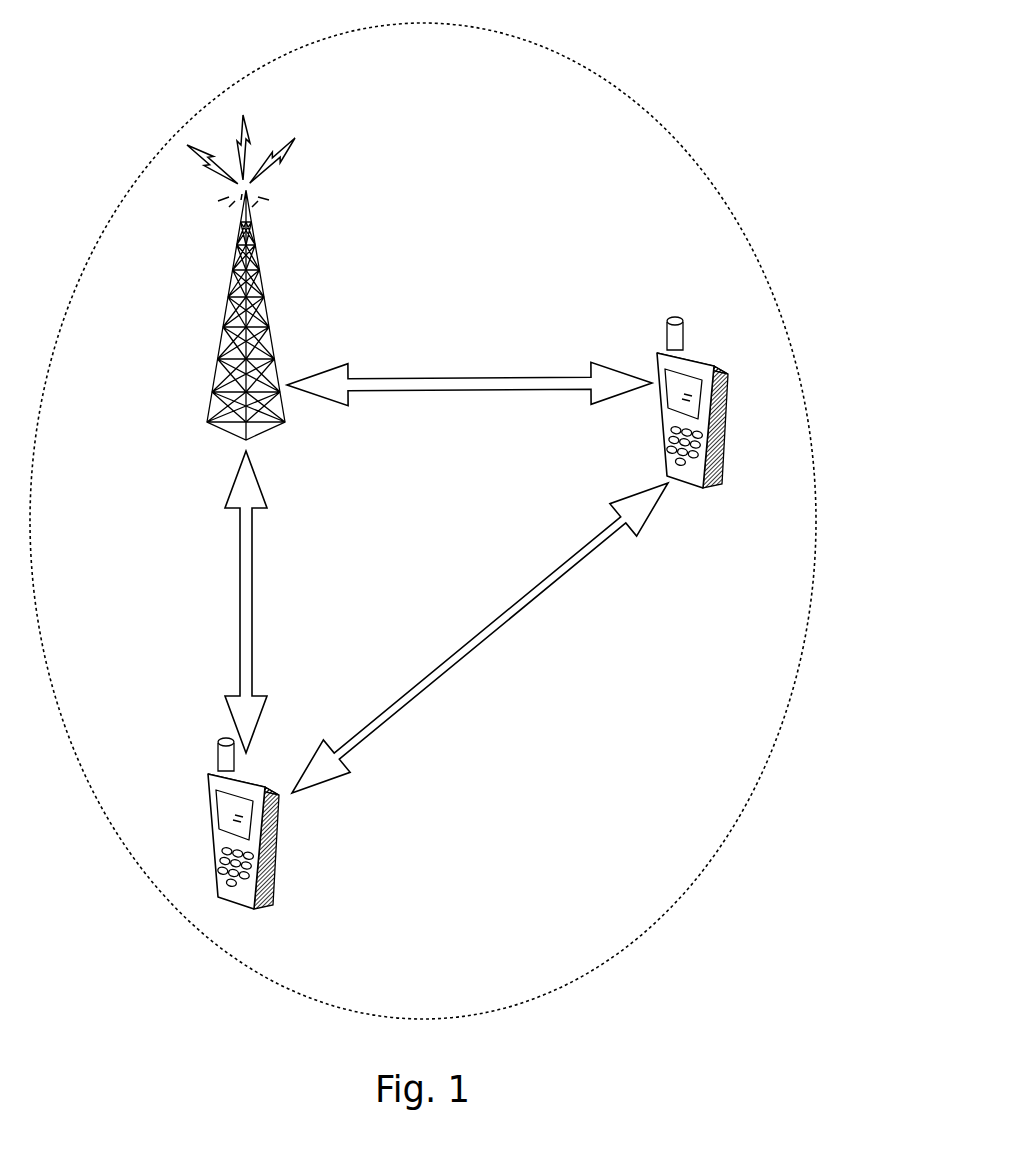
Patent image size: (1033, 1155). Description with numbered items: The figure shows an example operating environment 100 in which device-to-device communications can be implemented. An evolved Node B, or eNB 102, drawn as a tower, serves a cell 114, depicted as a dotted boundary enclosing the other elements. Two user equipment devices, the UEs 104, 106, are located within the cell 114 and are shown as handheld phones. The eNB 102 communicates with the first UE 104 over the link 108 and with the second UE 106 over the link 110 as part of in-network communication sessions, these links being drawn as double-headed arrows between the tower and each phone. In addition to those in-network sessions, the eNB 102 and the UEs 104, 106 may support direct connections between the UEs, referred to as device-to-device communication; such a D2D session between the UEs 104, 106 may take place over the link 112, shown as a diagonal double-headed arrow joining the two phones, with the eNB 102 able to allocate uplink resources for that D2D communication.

The operating environment 100 is at (634, 58).
The evolved Node B (eNB) 102 is at (223, 300).
The UE 104 is at (208, 797).
The UE 106 is at (700, 350).
The link 108 is at (238, 610).
The link 110 is at (463, 380).
The link 112 is at (472, 652).
The cell 114 is at (715, 855).